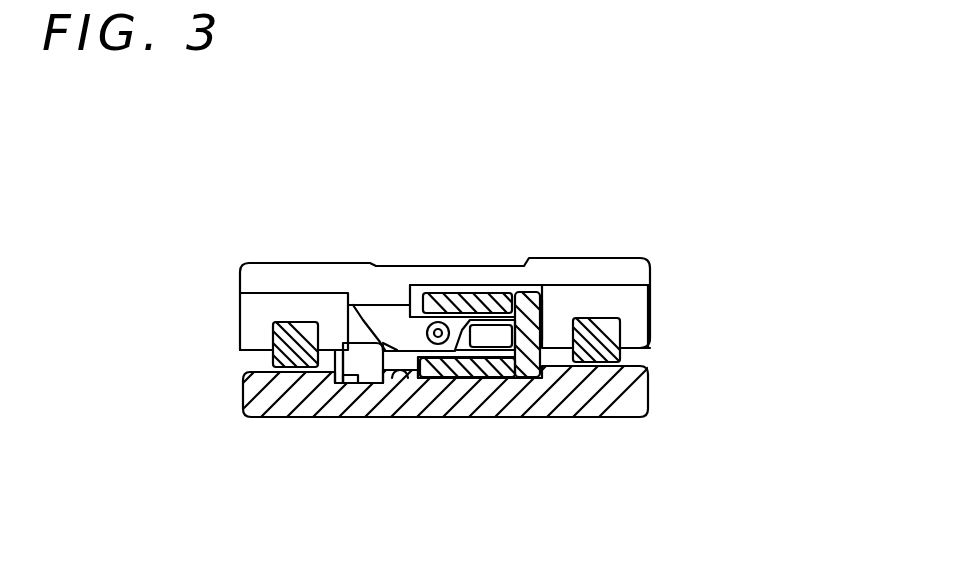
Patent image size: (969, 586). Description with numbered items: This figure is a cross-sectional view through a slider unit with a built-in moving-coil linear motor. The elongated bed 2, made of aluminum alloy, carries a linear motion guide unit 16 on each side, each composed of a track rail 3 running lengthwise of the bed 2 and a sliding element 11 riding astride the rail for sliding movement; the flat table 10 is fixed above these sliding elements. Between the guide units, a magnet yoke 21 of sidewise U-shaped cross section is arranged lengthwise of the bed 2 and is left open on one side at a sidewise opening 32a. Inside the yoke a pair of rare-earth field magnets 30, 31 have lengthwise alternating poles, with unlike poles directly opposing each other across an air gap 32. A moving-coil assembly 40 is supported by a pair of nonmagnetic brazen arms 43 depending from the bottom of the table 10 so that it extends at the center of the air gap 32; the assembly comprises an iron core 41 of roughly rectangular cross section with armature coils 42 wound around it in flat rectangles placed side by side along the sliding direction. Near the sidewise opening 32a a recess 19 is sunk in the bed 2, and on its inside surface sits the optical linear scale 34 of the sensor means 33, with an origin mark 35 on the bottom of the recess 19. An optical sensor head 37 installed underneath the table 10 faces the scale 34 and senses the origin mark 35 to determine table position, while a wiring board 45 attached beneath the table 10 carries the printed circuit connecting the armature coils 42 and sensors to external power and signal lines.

The bed 2 is at (610, 390).
The track rail 3 is at (283, 358).
The table 10 is at (303, 278).
The sliding element 11 is at (277, 312).
The linear motion guide unit 16 is at (226, 335).
The recess 19 is at (401, 385).
The magnet yoke 21 is at (547, 313).
The field magnet 30 is at (462, 306).
The field magnet 31 is at (470, 385).
The air gap 32 is at (545, 388).
The sidewise opening 32a is at (428, 383).
The sensor means 33 is at (340, 378).
The optical linear scale 34 is at (332, 398).
The origin mark 35 is at (348, 380).
The optical sensor head 37 is at (370, 368).
The moving-coil assembly 40 is at (488, 298).
The iron core 41 is at (502, 372).
The armature coil 42 is at (530, 322).
The nonmagnetic arm 43 is at (388, 320).
The wiring board 45 is at (403, 392).